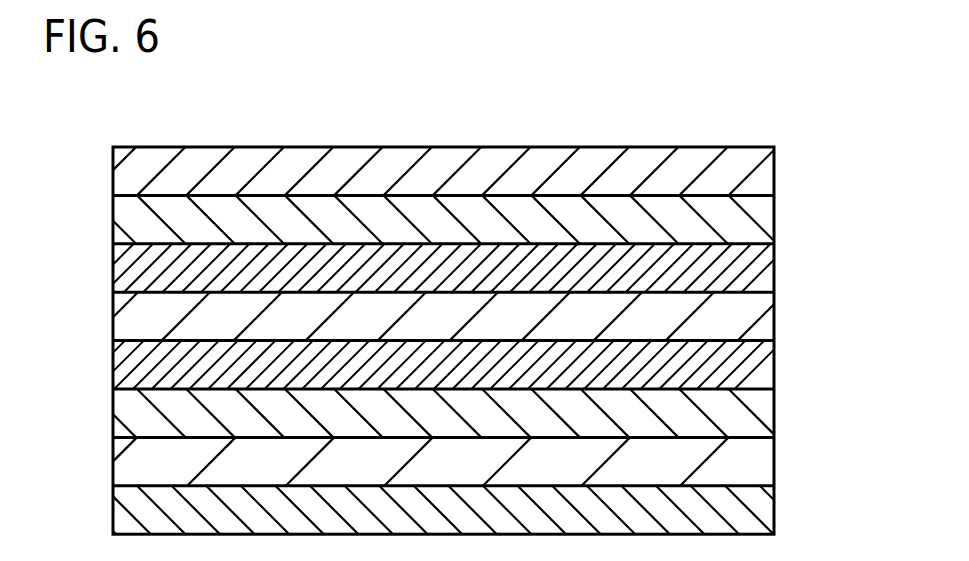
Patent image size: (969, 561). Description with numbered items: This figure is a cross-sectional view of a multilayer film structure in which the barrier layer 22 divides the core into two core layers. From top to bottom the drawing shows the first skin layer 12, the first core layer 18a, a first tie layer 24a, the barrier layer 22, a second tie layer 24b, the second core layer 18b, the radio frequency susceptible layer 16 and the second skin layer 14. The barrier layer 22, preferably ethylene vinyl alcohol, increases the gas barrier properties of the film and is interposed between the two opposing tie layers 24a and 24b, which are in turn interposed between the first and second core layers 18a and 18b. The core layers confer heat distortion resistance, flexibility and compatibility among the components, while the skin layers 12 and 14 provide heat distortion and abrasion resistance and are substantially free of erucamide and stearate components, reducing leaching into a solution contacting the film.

The first skin layer 12 is at (692, 152).
The second skin layer 14 is at (762, 507).
The radio frequency susceptible layer 16 is at (762, 457).
The first core layer 18a is at (763, 210).
The second core layer 18b is at (762, 407).
The barrier layer 22 is at (762, 308).
The first tie layer 24a is at (763, 258).
The second tie layer 24b is at (762, 357).